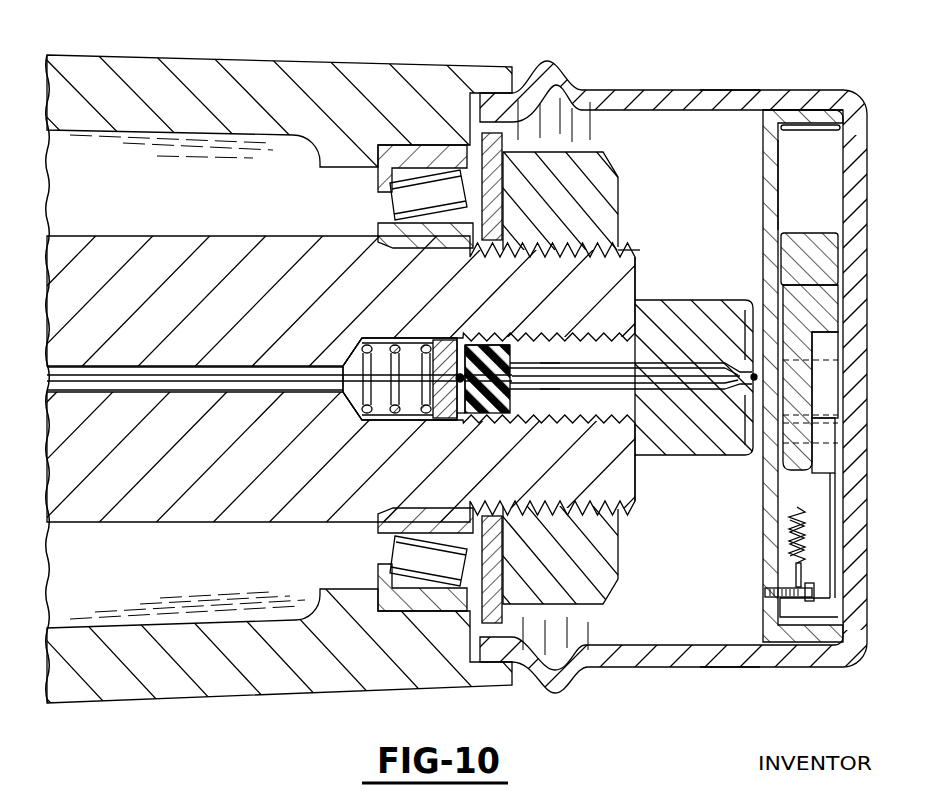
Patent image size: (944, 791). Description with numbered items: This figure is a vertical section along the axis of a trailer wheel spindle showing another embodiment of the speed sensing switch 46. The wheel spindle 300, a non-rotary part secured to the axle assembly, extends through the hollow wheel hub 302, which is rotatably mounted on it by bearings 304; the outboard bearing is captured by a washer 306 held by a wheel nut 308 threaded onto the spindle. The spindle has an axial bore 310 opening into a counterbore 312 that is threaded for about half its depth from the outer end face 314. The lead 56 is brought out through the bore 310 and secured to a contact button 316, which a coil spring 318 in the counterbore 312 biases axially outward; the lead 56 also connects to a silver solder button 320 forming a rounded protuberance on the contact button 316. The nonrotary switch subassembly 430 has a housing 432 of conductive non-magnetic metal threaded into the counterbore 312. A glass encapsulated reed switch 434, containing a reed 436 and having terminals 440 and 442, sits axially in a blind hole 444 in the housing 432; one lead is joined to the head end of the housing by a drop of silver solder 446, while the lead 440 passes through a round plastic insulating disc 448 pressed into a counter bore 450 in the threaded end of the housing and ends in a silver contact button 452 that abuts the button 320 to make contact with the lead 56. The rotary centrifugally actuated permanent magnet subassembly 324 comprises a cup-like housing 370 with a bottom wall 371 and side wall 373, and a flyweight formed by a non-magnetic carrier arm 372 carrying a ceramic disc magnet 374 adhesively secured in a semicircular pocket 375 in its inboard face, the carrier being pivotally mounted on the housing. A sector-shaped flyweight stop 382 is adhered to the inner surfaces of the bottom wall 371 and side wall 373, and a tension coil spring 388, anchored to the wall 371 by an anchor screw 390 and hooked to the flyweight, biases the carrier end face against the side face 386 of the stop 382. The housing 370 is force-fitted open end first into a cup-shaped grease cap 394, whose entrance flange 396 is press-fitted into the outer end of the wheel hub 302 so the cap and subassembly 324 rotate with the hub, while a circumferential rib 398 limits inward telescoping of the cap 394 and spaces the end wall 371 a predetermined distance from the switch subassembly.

The connector assembly 46 is at (742, 52).
The lead 56 is at (197, 385).
The wheel spindle 300 is at (248, 236).
The wheel hub 302 is at (252, 57).
The bearings 304 is at (382, 213).
The washer 306 is at (502, 623).
The wheel nut 308 is at (572, 150).
The axial bore 310 is at (164, 367).
The counterbore 312 is at (378, 338).
The outer end face 314 is at (640, 252).
The contact button 316 is at (443, 340).
The coil spring 318 is at (360, 424).
The silver solder button 320 is at (458, 421).
The rotary subassembly 324 is at (757, 137).
The cup-like housing 370 is at (758, 177).
The bottom wall 371 is at (779, 197).
The carrier arm 372 is at (832, 232).
The side wall 373 is at (830, 128).
The ceramic disc magnet 374 is at (820, 461).
The semicircular pocket 375 is at (808, 309).
The flyweight stop 382 is at (836, 470).
The side face 386 is at (826, 427).
The tension coil spring 388 is at (806, 536).
The anchor screw 390 is at (815, 593).
The grease cap 394 is at (723, 669).
The entrance flange 396 is at (490, 130).
The circumferential rib 398 is at (520, 88).
The nonrotary switch subassembly 430 is at (678, 251).
The housing 432 is at (652, 465).
The glass encapsulated reed switch 434 is at (605, 396).
The reed 436 is at (553, 392).
The terminal 440 is at (488, 343).
The terminal 442 is at (737, 390).
The blind hole 444 is at (705, 410).
The drop of silver solder 446 is at (753, 372).
The round disc 448 is at (464, 418).
The counter bore 450 is at (487, 417).
The silver contact button 452 is at (467, 340).